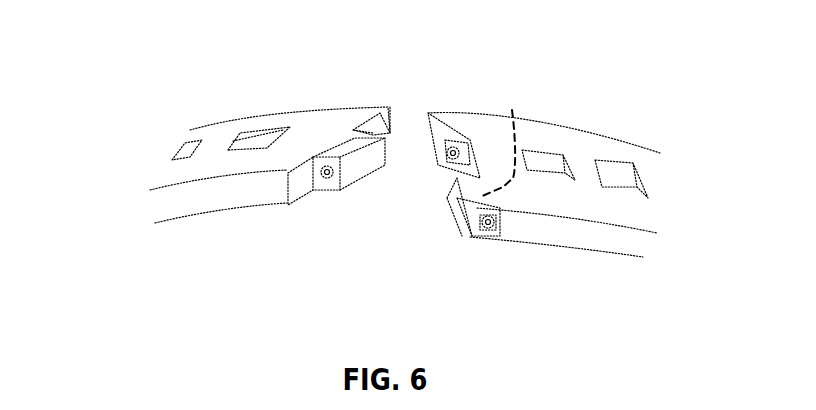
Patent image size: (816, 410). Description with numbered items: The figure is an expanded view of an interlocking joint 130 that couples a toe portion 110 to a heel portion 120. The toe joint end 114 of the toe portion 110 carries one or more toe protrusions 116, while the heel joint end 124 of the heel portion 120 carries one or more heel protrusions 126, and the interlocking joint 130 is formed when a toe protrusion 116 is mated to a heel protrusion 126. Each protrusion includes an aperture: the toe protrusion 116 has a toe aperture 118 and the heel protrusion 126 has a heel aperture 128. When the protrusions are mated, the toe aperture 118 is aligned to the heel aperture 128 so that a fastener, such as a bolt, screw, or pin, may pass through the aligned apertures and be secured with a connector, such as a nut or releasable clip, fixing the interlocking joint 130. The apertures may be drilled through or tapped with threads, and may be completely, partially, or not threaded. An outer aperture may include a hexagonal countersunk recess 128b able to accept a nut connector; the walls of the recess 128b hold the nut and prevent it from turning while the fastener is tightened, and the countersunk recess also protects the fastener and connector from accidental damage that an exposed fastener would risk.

The toe portion 110 is at (178, 193).
The toe joint end 114 is at (285, 153).
The toe protrusion 116 is at (363, 157).
The toe aperture 118 is at (327, 178).
The heel portion 120 is at (630, 232).
The heel joint end 124 is at (518, 182).
The heel protrusion 126 is at (433, 135).
The heel aperture 128 is at (453, 153).
The hexagonal countersunk recess 128b is at (493, 227).
The interlocking joint 130 is at (388, 87).